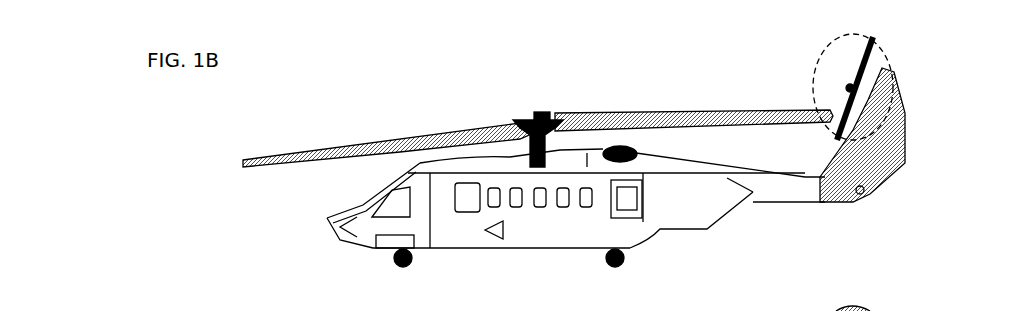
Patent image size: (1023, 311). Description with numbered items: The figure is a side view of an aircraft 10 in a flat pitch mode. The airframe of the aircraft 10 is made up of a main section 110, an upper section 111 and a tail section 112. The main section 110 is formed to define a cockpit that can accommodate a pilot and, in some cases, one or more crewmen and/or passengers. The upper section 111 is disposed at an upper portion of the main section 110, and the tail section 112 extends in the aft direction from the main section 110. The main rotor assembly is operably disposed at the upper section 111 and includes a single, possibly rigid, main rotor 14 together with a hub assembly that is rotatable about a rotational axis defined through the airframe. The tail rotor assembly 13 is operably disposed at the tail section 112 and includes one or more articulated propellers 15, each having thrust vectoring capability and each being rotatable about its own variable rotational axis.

The aircraft 10 is at (322, 217).
The main section 110 is at (500, 213).
The upper section 111 is at (505, 157).
The main rotor 14 is at (545, 125).
The tail section 112 is at (843, 192).
The tail rotor assembly 13 is at (867, 95).
The articulated propeller 15 is at (848, 88).